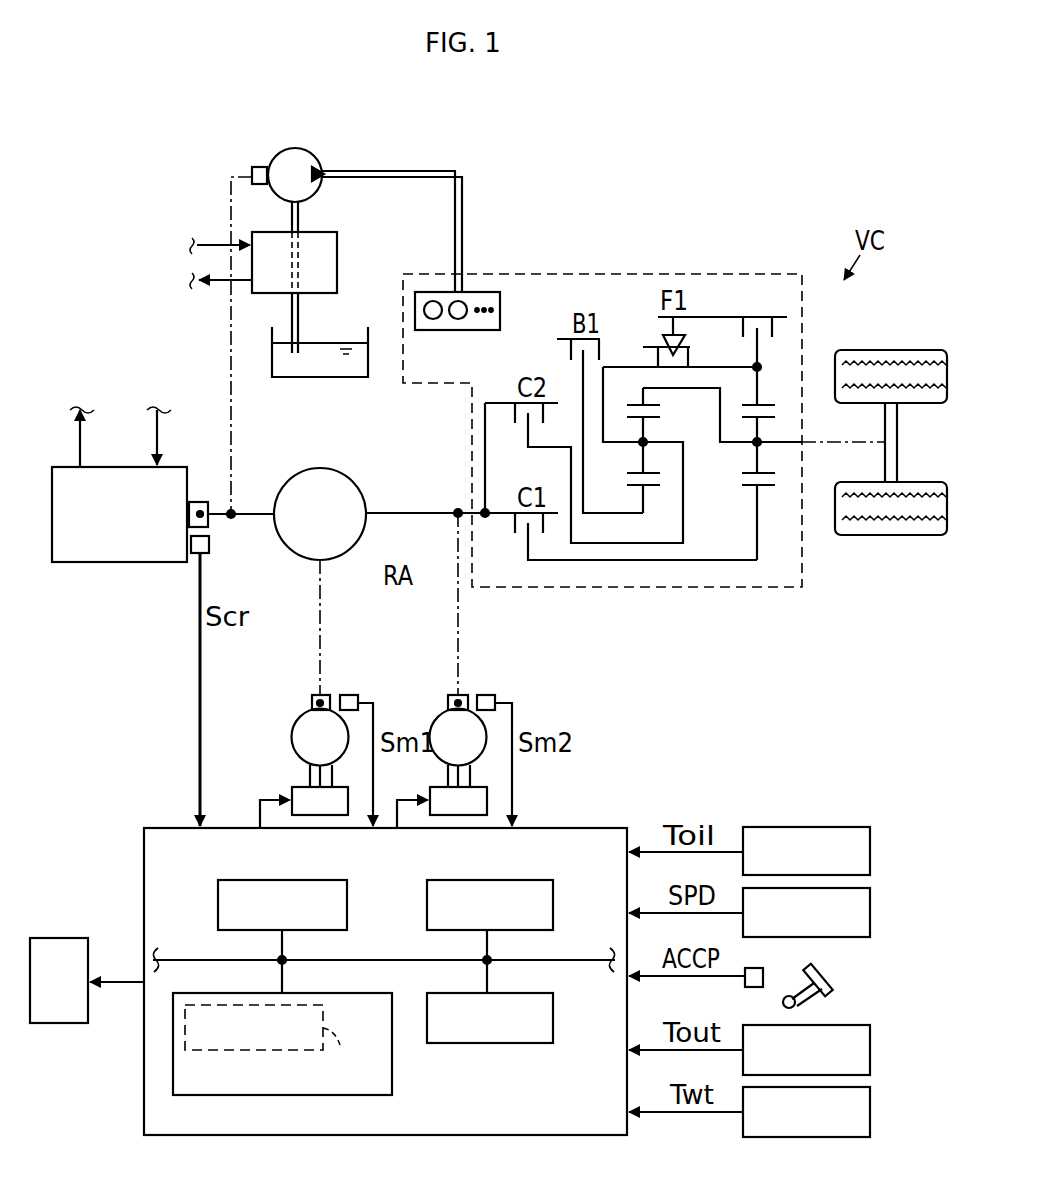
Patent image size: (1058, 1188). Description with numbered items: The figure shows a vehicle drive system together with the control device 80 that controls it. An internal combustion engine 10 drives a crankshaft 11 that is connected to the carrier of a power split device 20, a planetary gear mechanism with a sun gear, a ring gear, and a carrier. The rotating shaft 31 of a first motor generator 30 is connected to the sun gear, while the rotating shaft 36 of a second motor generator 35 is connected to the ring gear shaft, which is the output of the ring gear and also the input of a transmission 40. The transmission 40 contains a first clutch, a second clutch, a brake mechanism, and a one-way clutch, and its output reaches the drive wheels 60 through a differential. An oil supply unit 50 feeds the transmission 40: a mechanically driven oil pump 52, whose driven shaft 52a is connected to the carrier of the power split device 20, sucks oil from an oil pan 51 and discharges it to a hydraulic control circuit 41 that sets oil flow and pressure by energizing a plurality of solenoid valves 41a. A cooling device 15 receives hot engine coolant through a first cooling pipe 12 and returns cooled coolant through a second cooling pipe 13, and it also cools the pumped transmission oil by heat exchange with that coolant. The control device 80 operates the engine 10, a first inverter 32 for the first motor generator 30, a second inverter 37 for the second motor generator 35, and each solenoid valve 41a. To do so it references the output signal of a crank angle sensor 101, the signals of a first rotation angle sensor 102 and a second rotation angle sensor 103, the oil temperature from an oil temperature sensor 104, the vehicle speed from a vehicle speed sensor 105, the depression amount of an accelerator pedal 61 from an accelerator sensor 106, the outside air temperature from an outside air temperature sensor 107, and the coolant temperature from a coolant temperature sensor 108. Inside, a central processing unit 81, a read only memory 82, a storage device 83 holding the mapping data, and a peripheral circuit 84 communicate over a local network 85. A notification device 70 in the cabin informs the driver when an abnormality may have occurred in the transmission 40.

The internal combustion engine 10 is at (112, 466).
The crankshaft 11 is at (200, 501).
The first cooling pipe 12 is at (200, 244).
The second cooling pipe 13 is at (222, 284).
The cooling device 15 is at (322, 231).
The power split device 20 is at (356, 485).
The first motor generator 30 is at (291, 740).
The rotating shaft 31 is at (310, 702).
The first inverter 32 is at (350, 800).
The second motor generator 35 is at (430, 728).
The rotating shaft 36 is at (452, 694).
The second inverter 37 is at (488, 800).
The transmission 40 is at (636, 273).
The hydraulic control circuit 41 is at (480, 291).
The solenoid valve 41a is at (432, 320).
The oil supply unit 50 is at (370, 153).
The oil pan 51 is at (312, 378).
The oil pump 52 is at (306, 150).
The driven shaft 52a is at (260, 166).
The drive wheels 60 is at (930, 482).
The accelerator pedal 61 is at (825, 968).
The notification device 70 is at (58, 1024).
The control device 80 is at (580, 827).
The central processing unit 81 is at (304, 879).
The read only memory 82 is at (508, 879).
The storage device 83 is at (330, 992).
The peripheral circuit 84 is at (508, 992).
The local network 85 is at (530, 959).
The crank angle sensor 101 is at (196, 555).
The first rotation angle sensor 102 is at (349, 694).
The second rotation angle sensor 103 is at (486, 694).
The oil temperature sensor 104 is at (872, 855).
The vehicle speed sensor 105 is at (872, 915).
The accelerator sensor 106 is at (755, 967).
The outside air temperature sensor 107 is at (872, 1052).
The coolant temperature sensor 108 is at (872, 1114).